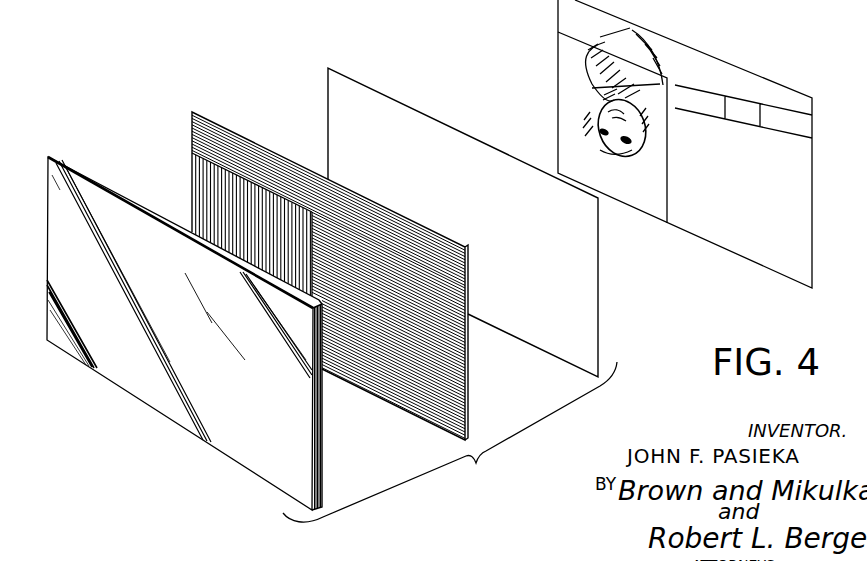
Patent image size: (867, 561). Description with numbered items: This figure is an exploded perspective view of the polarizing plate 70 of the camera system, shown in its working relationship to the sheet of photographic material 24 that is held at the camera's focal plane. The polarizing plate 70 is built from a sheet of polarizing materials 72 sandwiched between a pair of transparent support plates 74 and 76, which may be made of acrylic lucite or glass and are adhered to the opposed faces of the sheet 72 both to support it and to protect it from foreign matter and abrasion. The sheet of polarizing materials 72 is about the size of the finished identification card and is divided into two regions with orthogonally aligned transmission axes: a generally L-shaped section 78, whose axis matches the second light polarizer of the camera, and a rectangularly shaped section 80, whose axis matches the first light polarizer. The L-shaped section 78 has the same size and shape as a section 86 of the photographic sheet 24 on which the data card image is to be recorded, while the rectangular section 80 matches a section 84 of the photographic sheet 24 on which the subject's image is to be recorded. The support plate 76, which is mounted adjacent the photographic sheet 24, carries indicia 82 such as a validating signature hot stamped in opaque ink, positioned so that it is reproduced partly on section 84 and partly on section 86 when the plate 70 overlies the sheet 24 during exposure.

The photographic sheet 24 is at (737, 65).
The polarizing plate 70 is at (450, 442).
The sheet of polarizing materials 72 is at (262, 143).
The transparent support plate 74 is at (147, 402).
The transparent support plate 76 is at (497, 144).
The L-shaped section 78 is at (413, 402).
The rectangularly shaped section 80 is at (206, 186).
The indicia 82 is at (407, 131).
The section of the photographic sheet 84 is at (592, 84).
The section of the photographic sheet 86 is at (793, 220).